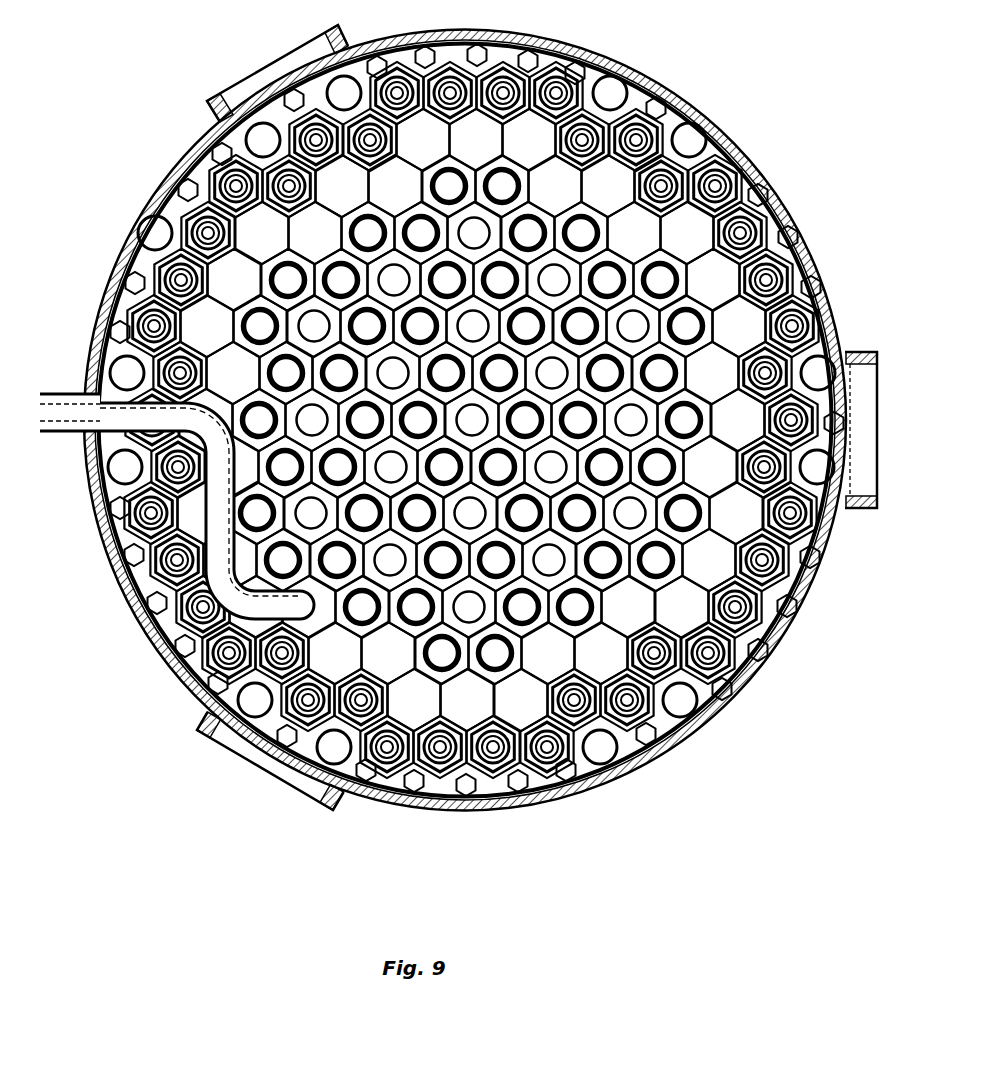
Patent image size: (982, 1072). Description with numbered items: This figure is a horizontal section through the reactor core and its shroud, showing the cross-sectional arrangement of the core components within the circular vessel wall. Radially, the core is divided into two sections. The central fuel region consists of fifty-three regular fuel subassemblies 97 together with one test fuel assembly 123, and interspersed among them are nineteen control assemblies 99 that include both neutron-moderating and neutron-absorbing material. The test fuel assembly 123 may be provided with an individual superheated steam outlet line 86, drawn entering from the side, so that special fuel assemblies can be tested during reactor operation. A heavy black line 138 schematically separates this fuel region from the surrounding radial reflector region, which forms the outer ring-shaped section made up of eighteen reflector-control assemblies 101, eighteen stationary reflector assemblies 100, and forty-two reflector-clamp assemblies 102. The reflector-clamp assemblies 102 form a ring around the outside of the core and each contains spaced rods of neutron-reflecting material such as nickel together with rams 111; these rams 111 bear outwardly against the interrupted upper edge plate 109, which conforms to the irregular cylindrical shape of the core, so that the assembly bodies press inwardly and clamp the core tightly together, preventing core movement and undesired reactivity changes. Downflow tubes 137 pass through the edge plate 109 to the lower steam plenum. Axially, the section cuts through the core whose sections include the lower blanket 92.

The superheated steam outlet line 86 is at (122, 532).
The lower blanket 92 is at (538, 806).
The fuel subassemblies 97 is at (517, 187).
The control assemblies 99 is at (389, 262).
The reflector assemblies 100 is at (405, 153).
The reflector-control assemblies 101 is at (607, 648).
The reflector-clamp assemblies 102 is at (692, 106).
The upper edge plate 109 is at (400, 35).
The rams 111 is at (625, 762).
The test fuel assembly 123 is at (503, 462).
The downflow tubes 137 is at (237, 118).
The heavy black line 138 is at (712, 421).